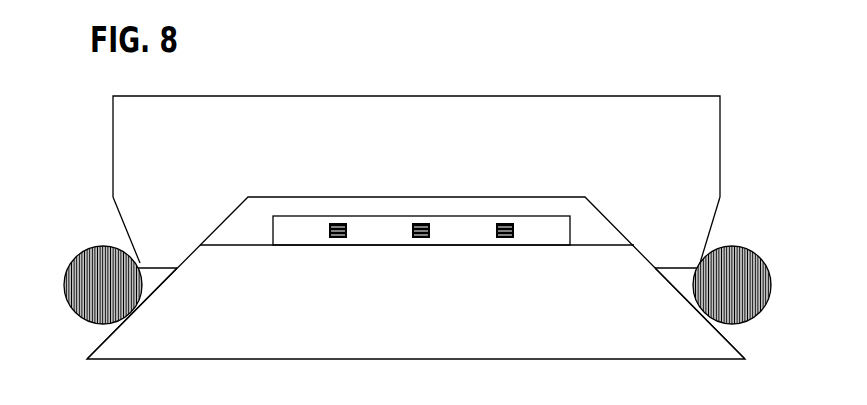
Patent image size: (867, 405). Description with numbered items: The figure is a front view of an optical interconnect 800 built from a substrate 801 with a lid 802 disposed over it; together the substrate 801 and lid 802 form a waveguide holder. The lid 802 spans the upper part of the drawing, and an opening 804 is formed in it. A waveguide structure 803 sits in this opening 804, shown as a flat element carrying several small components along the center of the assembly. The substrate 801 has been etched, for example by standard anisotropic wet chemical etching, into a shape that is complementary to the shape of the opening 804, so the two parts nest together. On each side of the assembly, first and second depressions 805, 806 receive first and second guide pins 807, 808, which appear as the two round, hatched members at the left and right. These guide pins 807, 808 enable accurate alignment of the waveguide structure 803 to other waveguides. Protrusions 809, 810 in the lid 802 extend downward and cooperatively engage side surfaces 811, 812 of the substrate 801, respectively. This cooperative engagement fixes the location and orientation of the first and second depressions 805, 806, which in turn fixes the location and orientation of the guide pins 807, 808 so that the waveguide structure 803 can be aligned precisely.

The optical interconnect 800 is at (776, 63).
The substrate 801 is at (735, 353).
The lid 802 is at (703, 134).
The waveguide structure 803 is at (520, 227).
The opening 804 is at (585, 217).
The first depression 805 is at (708, 243).
The second depression 806 is at (75, 252).
The first guide pin 807 is at (742, 248).
The second guide pin 808 is at (68, 299).
The protrusion 809 is at (720, 208).
The protrusion 810 is at (118, 228).
The side surface 811 is at (727, 340).
The side surface 812 is at (104, 323).